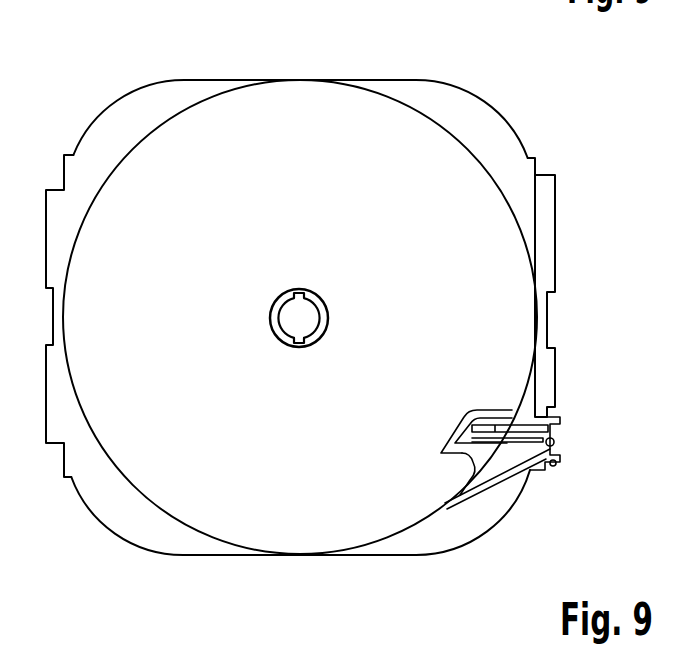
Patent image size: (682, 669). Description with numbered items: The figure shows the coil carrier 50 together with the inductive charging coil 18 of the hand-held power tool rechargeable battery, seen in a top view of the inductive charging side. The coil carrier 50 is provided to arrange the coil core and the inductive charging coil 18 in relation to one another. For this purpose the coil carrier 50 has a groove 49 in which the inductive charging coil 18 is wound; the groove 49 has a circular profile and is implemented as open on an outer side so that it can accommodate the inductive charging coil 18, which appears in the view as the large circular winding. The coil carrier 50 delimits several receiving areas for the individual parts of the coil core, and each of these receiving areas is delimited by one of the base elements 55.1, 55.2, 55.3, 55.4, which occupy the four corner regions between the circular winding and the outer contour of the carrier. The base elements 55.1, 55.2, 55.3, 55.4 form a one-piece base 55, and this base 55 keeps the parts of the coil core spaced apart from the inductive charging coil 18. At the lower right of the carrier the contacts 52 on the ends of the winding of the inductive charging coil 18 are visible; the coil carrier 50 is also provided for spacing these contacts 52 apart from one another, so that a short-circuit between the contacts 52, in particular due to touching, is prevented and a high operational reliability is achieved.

The inductive charging coil 18 is at (485, 445).
The groove 49 is at (495, 155).
The coil carrier 50 is at (312, 510).
The contacts 52 is at (557, 430).
The base 55 is at (280, 113).
The base element 55.1 is at (142, 543).
The base element 55.2 is at (460, 546).
The base element 55.3 is at (463, 115).
The base element 55.4 is at (141, 113).